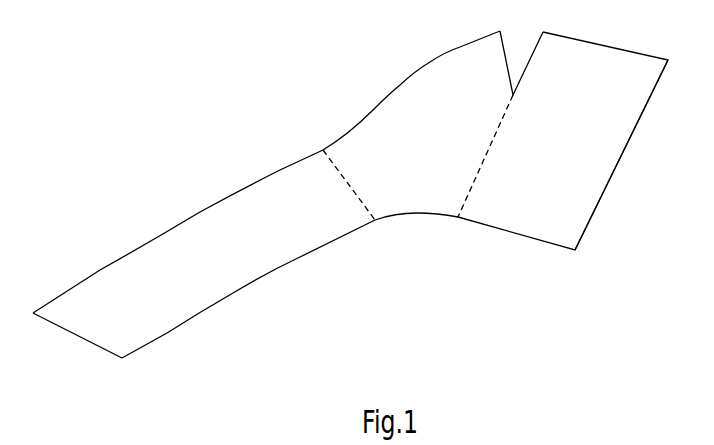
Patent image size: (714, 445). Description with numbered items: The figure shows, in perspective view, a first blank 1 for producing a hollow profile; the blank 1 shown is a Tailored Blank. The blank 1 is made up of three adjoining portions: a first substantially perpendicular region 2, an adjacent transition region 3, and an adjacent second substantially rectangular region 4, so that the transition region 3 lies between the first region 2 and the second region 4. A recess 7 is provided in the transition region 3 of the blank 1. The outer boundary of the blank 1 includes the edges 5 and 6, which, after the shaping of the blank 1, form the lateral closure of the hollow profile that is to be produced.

The blank 1 is at (350, 216).
The first substantially perpendicular region 2 is at (202, 262).
The transition region 3 is at (412, 157).
The second substantially rectangular region 4 is at (551, 139).
The edge 5 is at (97, 345).
The edge 6 is at (610, 182).
The recess 7 is at (512, 52).